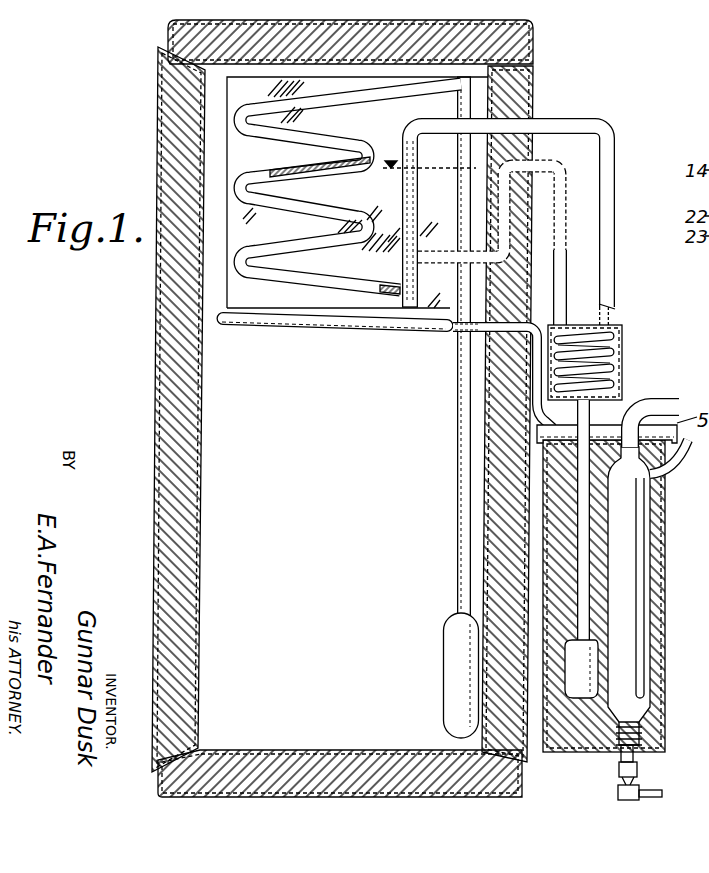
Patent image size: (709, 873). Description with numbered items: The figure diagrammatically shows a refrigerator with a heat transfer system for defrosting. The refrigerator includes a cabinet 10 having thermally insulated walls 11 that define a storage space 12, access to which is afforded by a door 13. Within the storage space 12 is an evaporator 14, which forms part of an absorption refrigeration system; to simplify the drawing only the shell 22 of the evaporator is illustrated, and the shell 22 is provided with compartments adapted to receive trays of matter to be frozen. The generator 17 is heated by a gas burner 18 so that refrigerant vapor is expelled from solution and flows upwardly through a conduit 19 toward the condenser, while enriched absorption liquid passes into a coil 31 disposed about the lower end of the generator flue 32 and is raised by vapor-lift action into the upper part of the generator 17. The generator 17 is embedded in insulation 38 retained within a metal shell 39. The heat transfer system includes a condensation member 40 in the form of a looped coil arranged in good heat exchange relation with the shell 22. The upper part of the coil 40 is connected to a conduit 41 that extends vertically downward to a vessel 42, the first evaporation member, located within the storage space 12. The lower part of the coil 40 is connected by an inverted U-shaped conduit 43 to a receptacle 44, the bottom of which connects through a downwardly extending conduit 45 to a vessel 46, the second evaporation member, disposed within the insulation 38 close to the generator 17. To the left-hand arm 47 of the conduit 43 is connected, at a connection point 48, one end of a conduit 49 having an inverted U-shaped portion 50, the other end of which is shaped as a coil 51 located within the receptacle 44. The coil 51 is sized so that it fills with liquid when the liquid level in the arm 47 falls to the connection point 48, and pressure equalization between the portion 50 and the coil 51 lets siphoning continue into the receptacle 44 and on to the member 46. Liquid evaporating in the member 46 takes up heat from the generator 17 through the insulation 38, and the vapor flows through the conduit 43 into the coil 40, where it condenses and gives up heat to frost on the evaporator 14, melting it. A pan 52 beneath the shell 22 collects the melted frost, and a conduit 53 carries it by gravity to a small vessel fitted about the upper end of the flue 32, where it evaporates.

The cabinet 10 is at (160, 33).
The thermally insulated walls 11 is at (528, 38).
The storage space 12 is at (350, 420).
The door 13 is at (155, 346).
The evaporator 14 is at (217, 297).
The generator 17 is at (653, 540).
The gas burner 18 is at (639, 781).
The conduit 19 is at (677, 455).
The shell 22 is at (228, 216).
The coil 31 is at (639, 729).
The generator flue 32 is at (660, 400).
The insulation 38 is at (655, 592).
The metal shell 39 is at (665, 646).
The condensation member 40 is at (261, 177).
The conduit 41 is at (455, 390).
The vessel 42 is at (446, 667).
The inverted U-shaped conduit 43 is at (570, 121).
The receptacle 44 is at (622, 360).
The conduit 45 is at (597, 411).
The vessel 46 is at (583, 696).
The left-hand arm 47 is at (402, 186).
The connection point 48 is at (417, 257).
The conduit 49 is at (562, 291).
The inverted U-shaped portion 50 is at (547, 164).
The coil 51 is at (622, 331).
The pan 52 is at (343, 331).
The conduit 53 is at (480, 331).